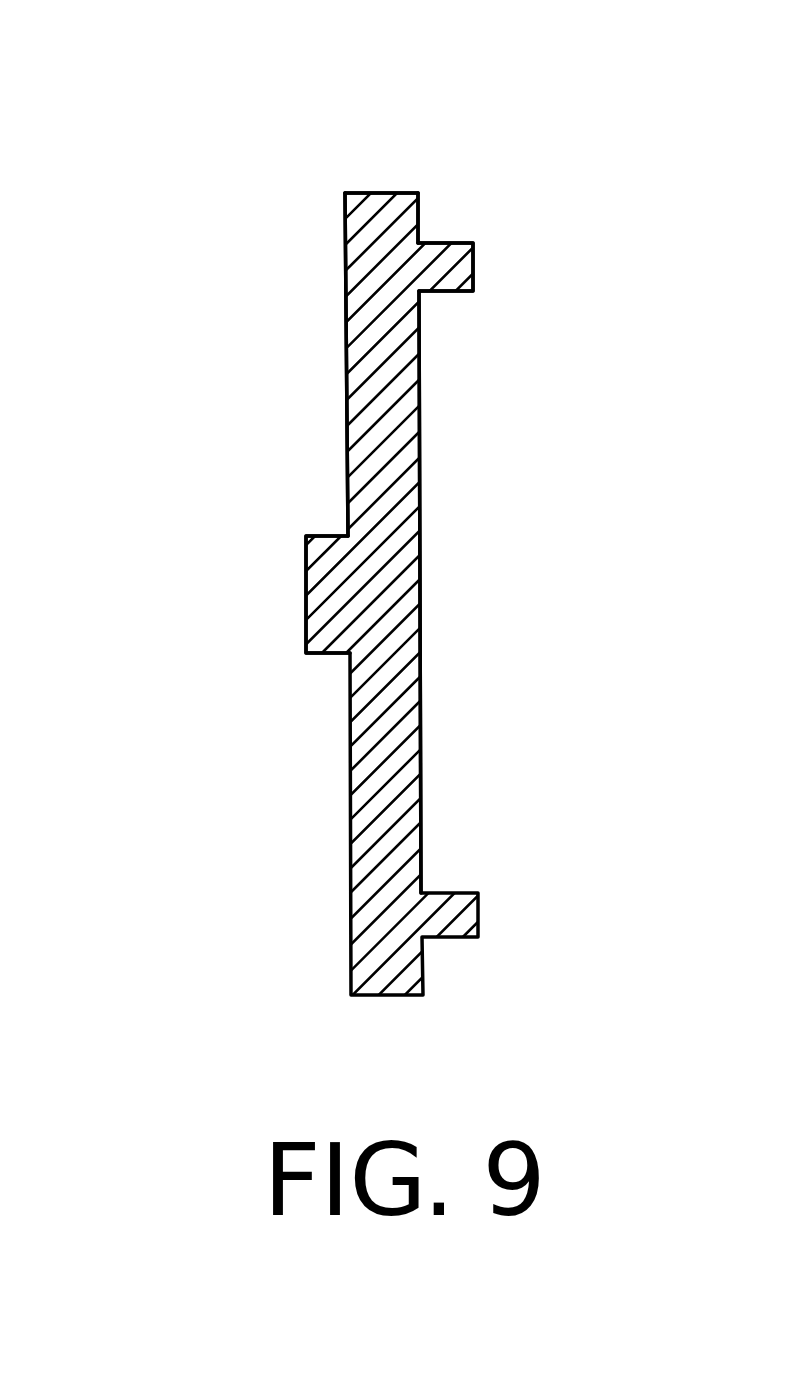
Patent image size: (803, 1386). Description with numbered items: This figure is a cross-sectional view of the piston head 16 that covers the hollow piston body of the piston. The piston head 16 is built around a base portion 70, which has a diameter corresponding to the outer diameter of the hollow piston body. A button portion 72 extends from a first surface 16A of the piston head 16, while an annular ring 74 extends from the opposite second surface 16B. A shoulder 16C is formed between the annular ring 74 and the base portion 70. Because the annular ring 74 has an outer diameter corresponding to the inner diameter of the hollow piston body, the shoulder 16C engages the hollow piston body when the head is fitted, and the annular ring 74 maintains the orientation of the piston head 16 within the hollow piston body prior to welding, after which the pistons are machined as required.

The piston head 16 is at (268, 172).
The first surface 16A is at (346, 330).
The second surface 16B is at (419, 462).
The shoulder 16C is at (418, 217).
The base portion 70 is at (380, 193).
The button portion 72 is at (306, 575).
The annular ring 74 is at (473, 263).